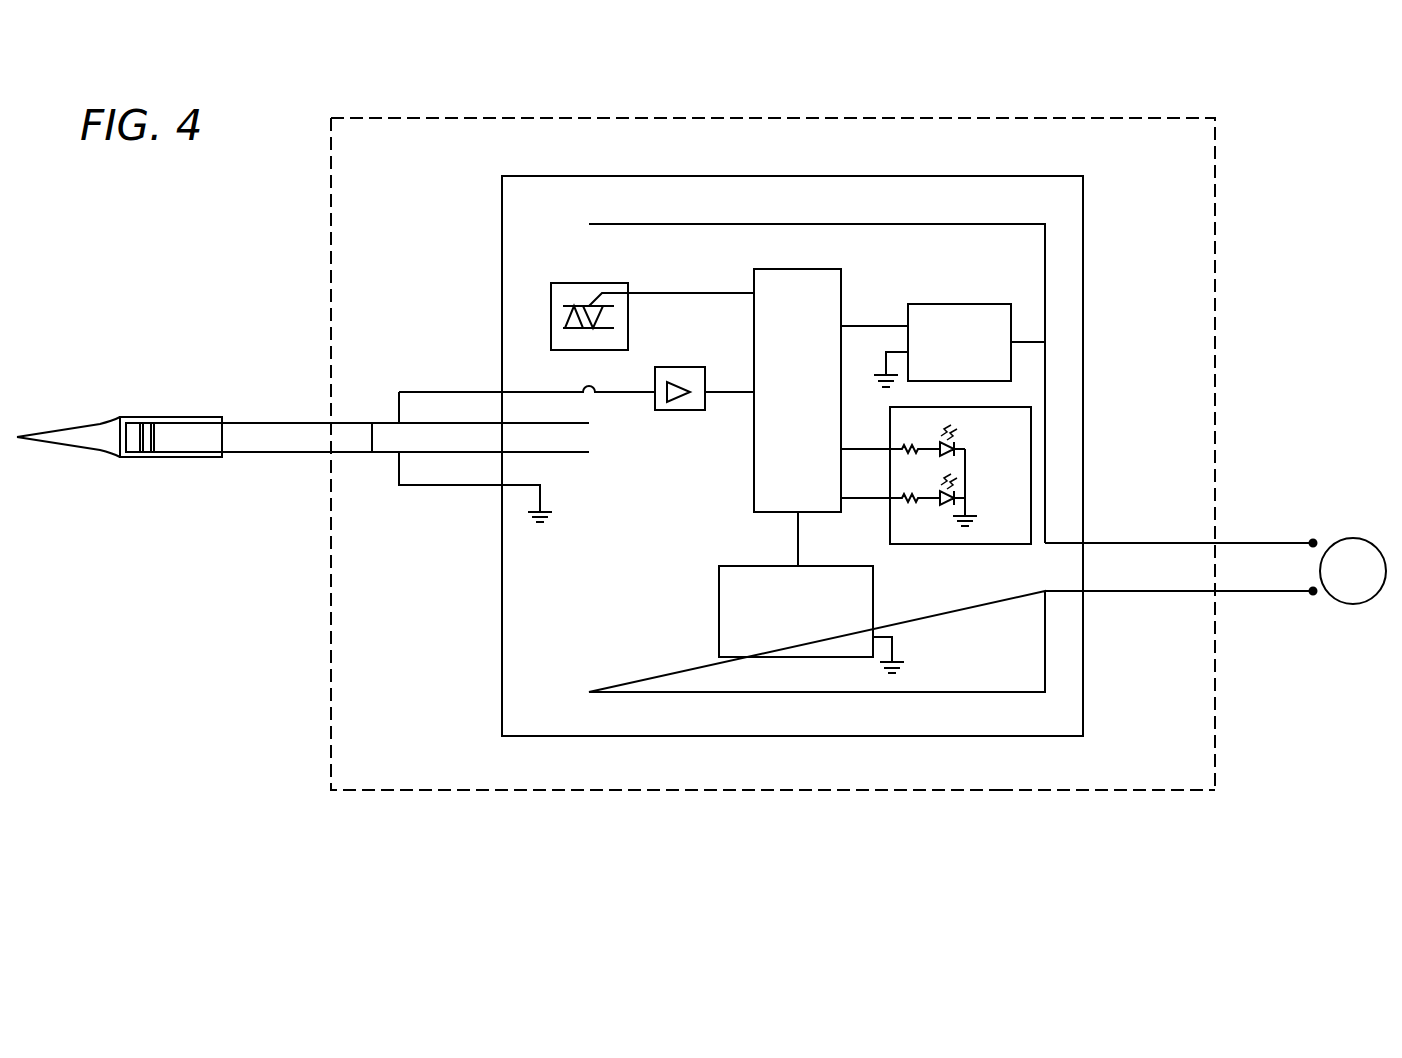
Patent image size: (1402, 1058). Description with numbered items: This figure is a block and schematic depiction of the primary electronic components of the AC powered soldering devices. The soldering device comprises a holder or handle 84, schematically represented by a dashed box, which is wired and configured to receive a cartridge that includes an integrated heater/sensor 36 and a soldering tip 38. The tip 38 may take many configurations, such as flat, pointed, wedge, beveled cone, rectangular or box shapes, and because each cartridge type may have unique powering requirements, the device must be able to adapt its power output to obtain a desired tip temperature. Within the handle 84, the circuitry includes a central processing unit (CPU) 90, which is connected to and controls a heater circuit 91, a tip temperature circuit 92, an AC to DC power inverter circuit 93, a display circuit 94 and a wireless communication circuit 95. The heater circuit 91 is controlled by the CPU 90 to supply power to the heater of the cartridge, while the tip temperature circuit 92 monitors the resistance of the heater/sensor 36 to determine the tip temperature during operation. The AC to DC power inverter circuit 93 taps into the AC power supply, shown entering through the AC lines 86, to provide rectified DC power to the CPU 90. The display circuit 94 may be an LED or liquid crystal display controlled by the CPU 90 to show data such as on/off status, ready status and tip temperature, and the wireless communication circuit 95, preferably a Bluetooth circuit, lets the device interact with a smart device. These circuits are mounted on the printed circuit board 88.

The integrated heater/sensor 36 is at (133, 445).
The soldering tip 38 is at (72, 425).
The holder or handle 84 is at (476, 790).
The AC power supply lines 86 is at (1255, 591).
The PCB 88 is at (1083, 233).
The central processing unit (CPU) 90 is at (755, 458).
The heater circuit 91 is at (613, 283).
The tip temperature circuit 92 is at (680, 410).
The AC to DC power inverter circuit 93 is at (960, 304).
The display circuit 94 is at (993, 543).
The wireless communication circuit 95 is at (719, 612).